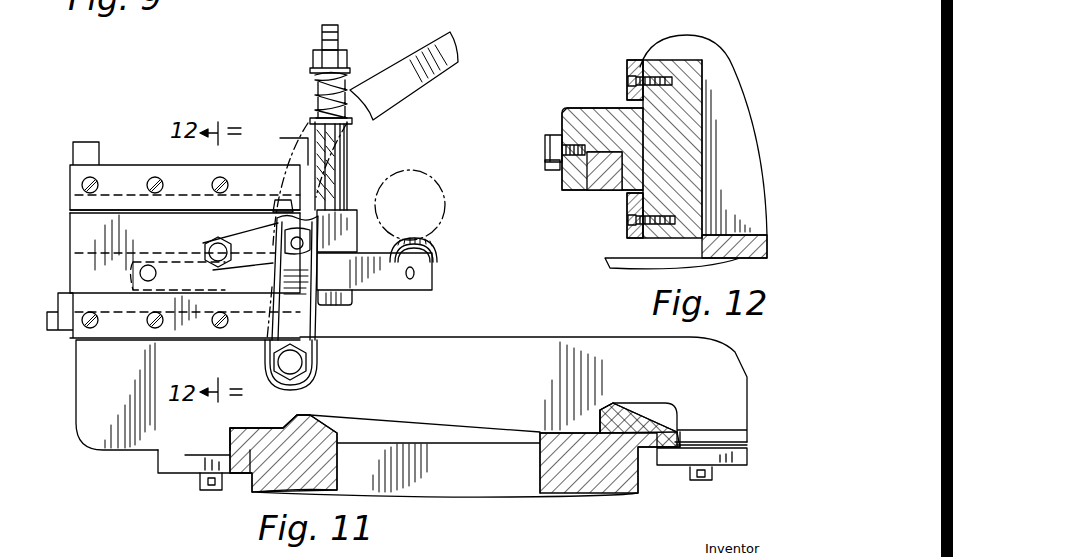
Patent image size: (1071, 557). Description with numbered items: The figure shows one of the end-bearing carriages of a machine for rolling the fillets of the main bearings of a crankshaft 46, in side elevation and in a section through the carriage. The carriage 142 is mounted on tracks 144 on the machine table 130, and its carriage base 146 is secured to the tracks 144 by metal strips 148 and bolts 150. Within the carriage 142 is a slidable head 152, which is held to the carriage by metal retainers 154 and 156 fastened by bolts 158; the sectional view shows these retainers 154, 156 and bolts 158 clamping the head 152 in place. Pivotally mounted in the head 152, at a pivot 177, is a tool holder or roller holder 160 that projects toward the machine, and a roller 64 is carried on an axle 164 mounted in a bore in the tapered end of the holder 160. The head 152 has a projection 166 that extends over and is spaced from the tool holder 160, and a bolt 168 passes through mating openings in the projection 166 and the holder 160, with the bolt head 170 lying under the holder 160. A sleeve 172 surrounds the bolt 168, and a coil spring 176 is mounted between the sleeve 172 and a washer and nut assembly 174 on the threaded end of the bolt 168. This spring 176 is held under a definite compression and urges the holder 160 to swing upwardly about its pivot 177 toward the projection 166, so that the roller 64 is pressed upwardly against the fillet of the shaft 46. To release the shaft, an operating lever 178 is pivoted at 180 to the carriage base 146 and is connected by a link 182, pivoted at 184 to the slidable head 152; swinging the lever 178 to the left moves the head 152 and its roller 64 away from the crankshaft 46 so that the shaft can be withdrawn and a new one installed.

In FIG. 11, the crankshaft 46 is at (432, 200).
In FIG. 11, the roller 64 is at (422, 250).
In FIG. 11, the table 130 is at (545, 455).
In FIG. 11, the carriage 142 is at (118, 170).
In FIG. 12, the carriage 142 is at (728, 72).
In FIG. 11, the tracks 144 is at (660, 436).
In FIG. 11, the carriage base 146 is at (88, 378).
In FIG. 11, the metal strips 148 is at (160, 462).
In FIG. 11, the bolts 150 is at (199, 481).
In FIG. 11, the slidable head 152 is at (88, 272).
In FIG. 12, the slidable head 152 is at (610, 95).
In FIG. 11, the metal retainer 154 is at (80, 174).
In FIG. 12, the metal retainer 154 is at (637, 62).
In FIG. 11, the metal retainer 156 is at (82, 338).
In FIG. 12, the metal retainer 156 is at (632, 215).
In FIG. 11, the bolts 158 is at (155, 177).
In FIG. 12, the bolts 158 is at (628, 78).
In FIG. 11, the tool holder 160 is at (392, 282).
In FIG. 12, the tool holder 160 is at (608, 180).
In FIG. 11, the axle 164 is at (416, 274).
In FIG. 11, the projection 166 is at (352, 216).
In FIG. 11, the bolt 168 is at (322, 35).
In FIG. 11, the bolt head 170 is at (340, 306).
In FIG. 11, the sleeve 172 is at (348, 163).
In FIG. 11, the washer and nut assembly 174 is at (312, 58).
In FIG. 11, the coil spring 176 is at (315, 88).
In FIG. 11, the pivot 177 is at (156, 275).
In FIG. 11, the operating lever 178 is at (400, 75).
In FIG. 11, the pivot 180 is at (300, 362).
In FIG. 11, the link 182 is at (250, 240).
In FIG. 12, the link 182 is at (552, 170).
In FIG. 11, the pivot 184 is at (206, 250).
In FIG. 12, the pivot 184 is at (548, 134).